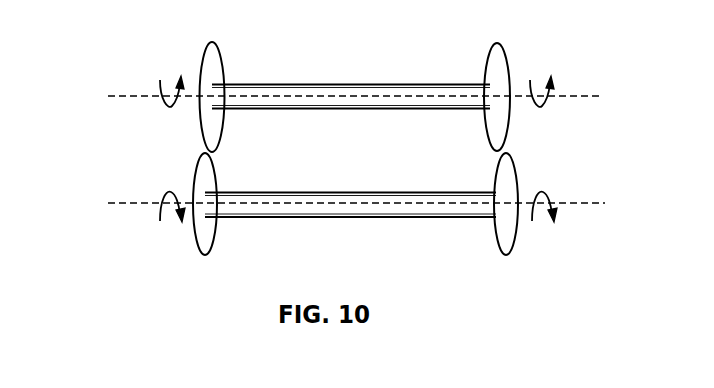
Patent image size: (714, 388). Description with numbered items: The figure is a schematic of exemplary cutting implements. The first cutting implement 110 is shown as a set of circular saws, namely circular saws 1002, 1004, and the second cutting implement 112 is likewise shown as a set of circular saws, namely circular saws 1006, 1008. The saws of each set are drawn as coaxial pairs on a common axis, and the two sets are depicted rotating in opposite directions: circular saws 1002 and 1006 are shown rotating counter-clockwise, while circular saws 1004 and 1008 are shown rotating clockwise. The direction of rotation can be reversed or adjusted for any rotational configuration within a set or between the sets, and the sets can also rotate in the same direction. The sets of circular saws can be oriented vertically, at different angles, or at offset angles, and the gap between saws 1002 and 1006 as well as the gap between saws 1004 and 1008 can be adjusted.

The first cutting implement 110 is at (558, 144).
The second cutting implement 112 is at (137, 148).
The circular saw 1002 is at (497, 43).
The circular saw 1004 is at (506, 255).
The circular saw 1006 is at (212, 42).
The circular saw 1008 is at (205, 255).